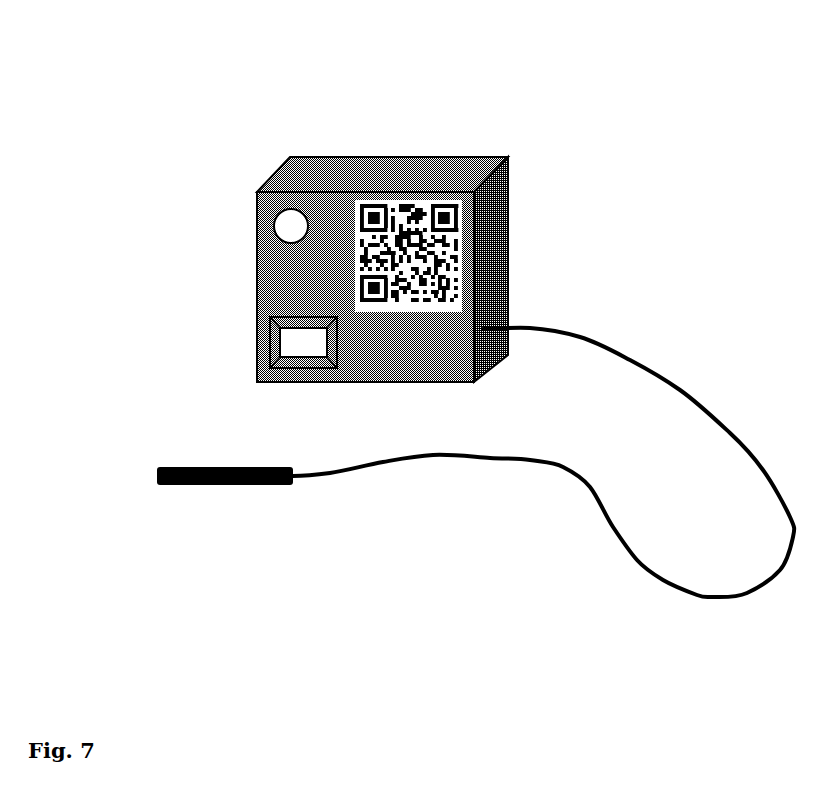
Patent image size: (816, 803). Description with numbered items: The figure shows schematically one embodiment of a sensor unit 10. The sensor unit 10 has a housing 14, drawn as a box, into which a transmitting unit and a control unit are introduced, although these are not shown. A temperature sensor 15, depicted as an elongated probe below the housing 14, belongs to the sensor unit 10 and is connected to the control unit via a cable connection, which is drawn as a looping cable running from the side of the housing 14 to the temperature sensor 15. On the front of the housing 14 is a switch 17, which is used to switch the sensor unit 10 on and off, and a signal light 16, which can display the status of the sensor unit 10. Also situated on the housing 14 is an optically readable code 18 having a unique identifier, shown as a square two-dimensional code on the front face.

The sensor unit 10 is at (436, 310).
The housing 14 is at (313, 175).
The temperature sensor 15 is at (194, 506).
The signal light 16 is at (273, 225).
The switch 17 is at (273, 338).
The optically readable code 18 is at (457, 240).